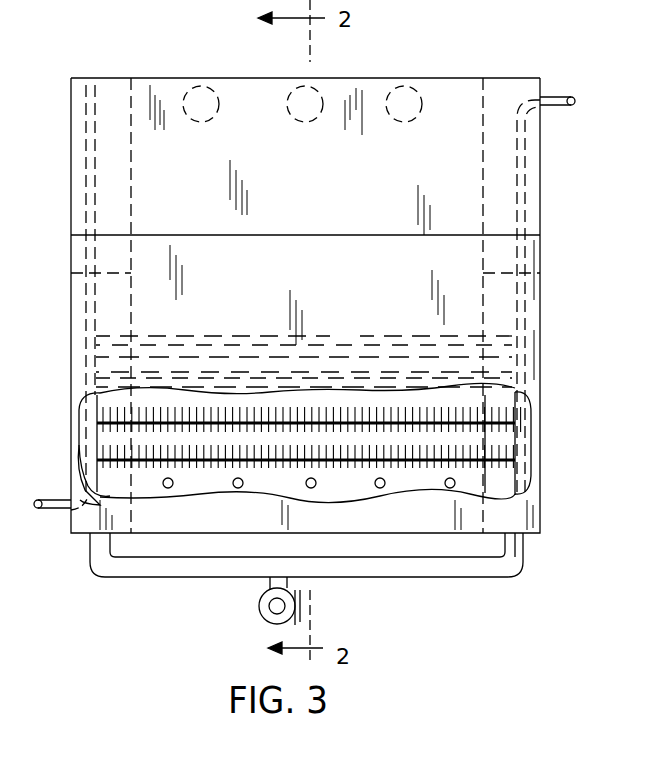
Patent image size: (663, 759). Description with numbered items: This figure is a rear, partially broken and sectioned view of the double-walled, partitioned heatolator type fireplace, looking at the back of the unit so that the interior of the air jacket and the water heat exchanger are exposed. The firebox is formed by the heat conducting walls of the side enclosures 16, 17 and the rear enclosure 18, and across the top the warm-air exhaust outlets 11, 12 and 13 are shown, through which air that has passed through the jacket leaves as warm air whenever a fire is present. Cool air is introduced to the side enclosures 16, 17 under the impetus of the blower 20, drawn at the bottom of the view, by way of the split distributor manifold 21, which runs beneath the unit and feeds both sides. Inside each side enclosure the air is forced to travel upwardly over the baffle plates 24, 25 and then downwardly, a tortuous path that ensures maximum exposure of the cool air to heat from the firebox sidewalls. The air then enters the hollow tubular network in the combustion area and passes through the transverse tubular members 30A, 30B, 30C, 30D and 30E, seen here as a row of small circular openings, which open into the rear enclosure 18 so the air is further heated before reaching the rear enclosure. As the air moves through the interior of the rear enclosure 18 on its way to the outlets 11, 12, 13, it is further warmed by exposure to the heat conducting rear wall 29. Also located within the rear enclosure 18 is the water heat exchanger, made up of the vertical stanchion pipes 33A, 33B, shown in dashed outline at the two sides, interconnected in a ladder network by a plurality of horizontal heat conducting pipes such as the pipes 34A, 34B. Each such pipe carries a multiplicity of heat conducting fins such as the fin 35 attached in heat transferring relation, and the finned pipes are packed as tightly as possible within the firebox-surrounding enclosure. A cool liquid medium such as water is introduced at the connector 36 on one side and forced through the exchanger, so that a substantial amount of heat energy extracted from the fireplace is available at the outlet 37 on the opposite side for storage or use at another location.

The outlet 11 is at (400, 122).
The outlet 12 is at (300, 122).
The outlet 13 is at (196, 122).
The side enclosure 16 is at (498, 78).
The side enclosure 17 is at (103, 78).
The rear enclosure 18 is at (323, 275).
The blower 20 is at (259, 610).
The split distributor manifold 21 is at (432, 577).
The baffle plate 24 is at (493, 270).
The baffle plate 25 is at (80, 270).
The heat conducting rear wall 29 is at (292, 410).
The transverse tubular member 30A is at (445, 484).
The transverse tubular member 30B is at (380, 489).
The transverse tubular member 30C is at (305, 484).
The transverse tubular member 30D is at (238, 489).
The transverse tubular member 30E is at (168, 489).
The vertical stanchion pipe 33A is at (86, 123).
The vertical stanchion pipe 33B is at (517, 172).
The heat conducting pipe 34A is at (97, 445).
The heat conducting pipe 34B is at (352, 410).
The heat conducting fin 35 is at (248, 410).
The connector 36 is at (46, 510).
The outlet 37 is at (560, 97).